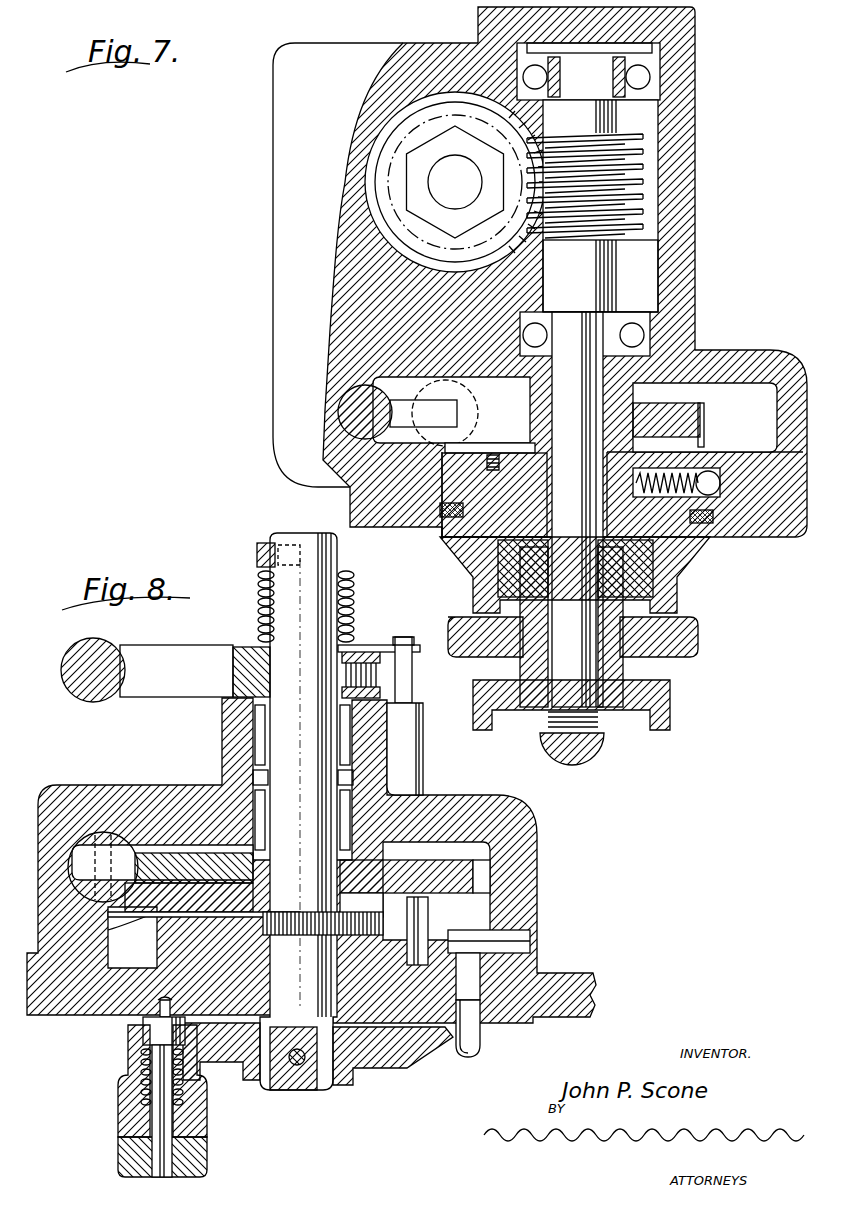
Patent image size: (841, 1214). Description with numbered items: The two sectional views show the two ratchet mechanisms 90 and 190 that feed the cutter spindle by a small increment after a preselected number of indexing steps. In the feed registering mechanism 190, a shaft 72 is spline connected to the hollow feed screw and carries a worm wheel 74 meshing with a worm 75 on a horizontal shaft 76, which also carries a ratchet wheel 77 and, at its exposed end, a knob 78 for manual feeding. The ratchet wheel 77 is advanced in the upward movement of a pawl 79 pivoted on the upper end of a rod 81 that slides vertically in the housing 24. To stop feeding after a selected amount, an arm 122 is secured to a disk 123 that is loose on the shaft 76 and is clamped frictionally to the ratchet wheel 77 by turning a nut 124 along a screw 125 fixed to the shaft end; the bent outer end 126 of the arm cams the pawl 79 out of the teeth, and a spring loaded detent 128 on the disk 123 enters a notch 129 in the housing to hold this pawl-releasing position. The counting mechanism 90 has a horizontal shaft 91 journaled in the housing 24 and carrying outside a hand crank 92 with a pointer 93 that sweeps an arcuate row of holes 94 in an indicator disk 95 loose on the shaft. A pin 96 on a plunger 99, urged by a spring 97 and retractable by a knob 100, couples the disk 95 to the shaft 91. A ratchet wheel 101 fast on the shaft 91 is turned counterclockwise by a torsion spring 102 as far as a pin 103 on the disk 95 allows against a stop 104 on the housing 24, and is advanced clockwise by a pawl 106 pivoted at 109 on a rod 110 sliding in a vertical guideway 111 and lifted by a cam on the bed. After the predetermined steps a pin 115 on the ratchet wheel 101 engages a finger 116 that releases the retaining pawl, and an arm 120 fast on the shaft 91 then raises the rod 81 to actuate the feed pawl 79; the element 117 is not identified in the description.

In FIG. 7, the shaft 72 is at (468, 193).
In FIG. 7, the worm wheel 74 is at (533, 255).
In FIG. 7, the worm 75 is at (643, 177).
In FIG. 7, the horizontal shaft 76 is at (612, 278).
In FIG. 7, the ratchet wheel 77 is at (684, 414).
In FIG. 7, the knob 78 is at (670, 708).
In FIG. 7, the pawl 79 is at (407, 405).
In FIG. 7, the rod 81 is at (445, 395).
In FIG. 8, the rod 81 is at (112, 655).
In FIG. 7, the arm 122 is at (499, 468).
In FIG. 7, the disk 123 is at (682, 550).
In FIG. 7, the nut 124 is at (672, 660).
In FIG. 7, the screw 125 is at (480, 612).
In FIG. 7, the outer end of arm 126 is at (447, 455).
In FIG. 7, the spring loaded detent 128 is at (718, 473).
In FIG. 7, the notch 129 is at (727, 471).
In FIG. 7, the ratchet mechanism 190 is at (660, 383).
In FIG. 8, the housing 24 is at (518, 825).
In FIG. 8, the ratchet mechanism 90 is at (374, 1086).
In FIG. 8, the horizontal shaft 91 is at (300, 849).
In FIG. 8, the hand crank 92 is at (207, 1125).
In FIG. 8, the pointer 93 is at (415, 1060).
In FIG. 8, the holes 94 is at (143, 1025).
In FIG. 8, the indicator disk 95 is at (473, 1058).
In FIG. 8, the pin 96 is at (172, 1002).
In FIG. 8, the spring 97 is at (128, 1070).
In FIG. 8, the plunger 99 is at (143, 1050).
In FIG. 8, the knob 100 is at (207, 1157).
In FIG. 8, the ratchet wheel 101 is at (470, 876).
In FIG. 8, the torsion spring 102 is at (352, 597).
In FIG. 8, the pin 103 is at (480, 965).
In FIG. 8, the stop 104 is at (530, 940).
In FIG. 8, the pawl 106 is at (90, 845).
In FIG. 8, the pivot 109 is at (95, 925).
In FIG. 8, the rod 110 is at (105, 840).
In FIG. 8, the vertical guideway 111 is at (110, 845).
In FIG. 8, the pin 115 is at (245, 909).
In FIG. 8, the finger 116 is at (376, 905).
In FIG. 8, the pin 117 is at (428, 908).
In FIG. 8, the arm 120 is at (193, 660).